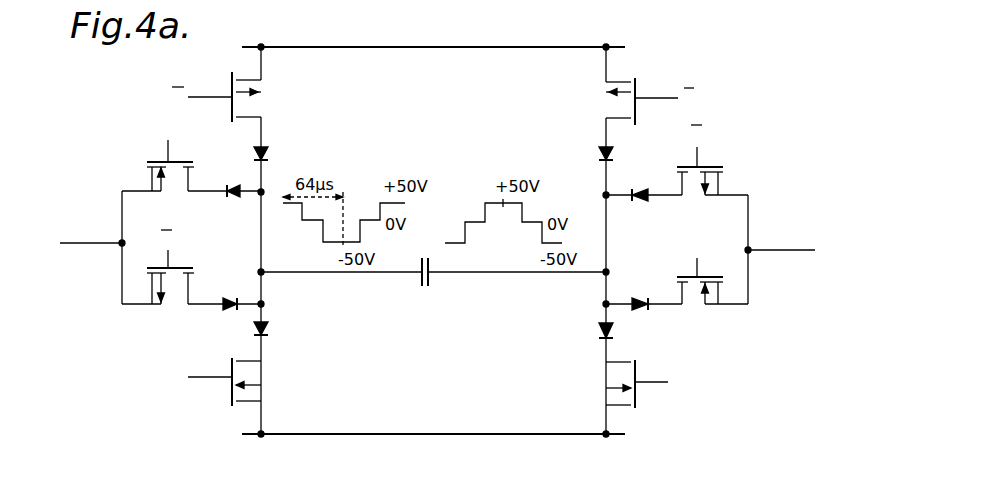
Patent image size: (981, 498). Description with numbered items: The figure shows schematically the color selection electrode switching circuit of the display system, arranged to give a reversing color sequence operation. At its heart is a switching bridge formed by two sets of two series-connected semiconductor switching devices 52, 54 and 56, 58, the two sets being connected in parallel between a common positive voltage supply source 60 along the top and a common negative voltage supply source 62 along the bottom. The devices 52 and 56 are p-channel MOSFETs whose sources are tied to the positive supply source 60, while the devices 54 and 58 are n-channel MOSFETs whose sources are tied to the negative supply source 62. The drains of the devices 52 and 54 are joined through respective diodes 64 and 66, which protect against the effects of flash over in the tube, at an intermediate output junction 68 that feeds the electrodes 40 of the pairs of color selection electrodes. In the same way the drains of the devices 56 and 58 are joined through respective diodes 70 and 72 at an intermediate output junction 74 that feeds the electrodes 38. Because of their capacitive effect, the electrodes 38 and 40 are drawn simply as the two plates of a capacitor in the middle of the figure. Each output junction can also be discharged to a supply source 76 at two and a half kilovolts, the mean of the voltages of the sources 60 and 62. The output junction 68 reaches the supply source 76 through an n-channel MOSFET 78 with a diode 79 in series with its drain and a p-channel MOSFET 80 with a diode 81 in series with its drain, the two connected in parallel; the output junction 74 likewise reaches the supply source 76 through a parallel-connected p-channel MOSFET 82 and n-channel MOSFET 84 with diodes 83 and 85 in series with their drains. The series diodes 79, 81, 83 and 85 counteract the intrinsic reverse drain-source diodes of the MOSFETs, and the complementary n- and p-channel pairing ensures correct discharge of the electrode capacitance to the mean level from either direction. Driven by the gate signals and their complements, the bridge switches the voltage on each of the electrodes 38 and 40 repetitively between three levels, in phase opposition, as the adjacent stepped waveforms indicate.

The electrodes 38 is at (430, 283).
The electrodes 40 is at (420, 279).
The semiconductor switching device 52 is at (263, 108).
The semiconductor switching device 54 is at (264, 372).
The semiconductor switching device 56 is at (600, 110).
The semiconductor switching device 58 is at (596, 370).
The common positive voltage supply source 60 is at (568, 47).
The common negative voltage supply source 62 is at (281, 437).
The diode 64 is at (268, 154).
The diode 66 is at (268, 330).
The intermediate output junction 68 is at (263, 274).
The diode 70 is at (601, 149).
The diode 72 is at (600, 330).
The intermediate output junction 74 is at (608, 270).
The supply source 76 is at (88, 250).
The n-channel MOSFET 78 is at (152, 150).
The diode 79 is at (236, 197).
The p-channel MOSFET 80 is at (157, 315).
The diode 81 is at (236, 296).
The p-channel MOSFET 82 is at (714, 160).
The diode 83 is at (646, 199).
The n-channel MOSFET 84 is at (713, 320).
The diode 85 is at (633, 302).